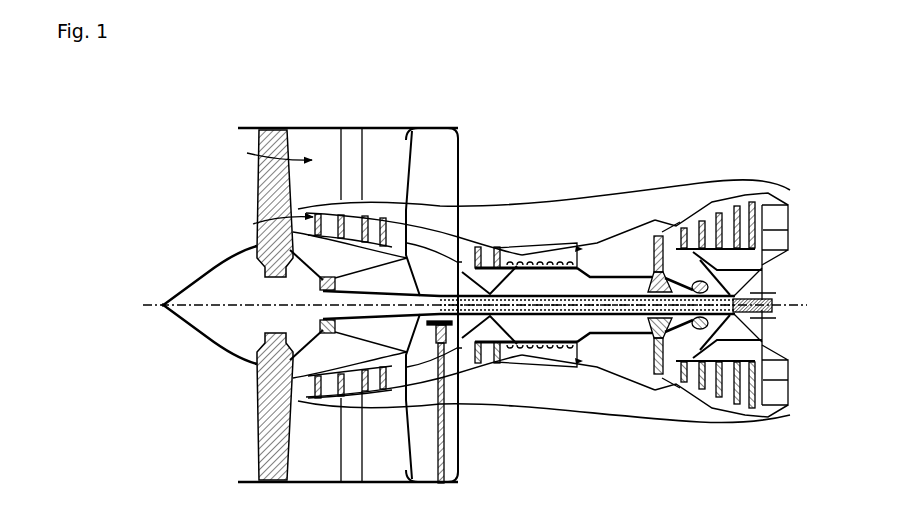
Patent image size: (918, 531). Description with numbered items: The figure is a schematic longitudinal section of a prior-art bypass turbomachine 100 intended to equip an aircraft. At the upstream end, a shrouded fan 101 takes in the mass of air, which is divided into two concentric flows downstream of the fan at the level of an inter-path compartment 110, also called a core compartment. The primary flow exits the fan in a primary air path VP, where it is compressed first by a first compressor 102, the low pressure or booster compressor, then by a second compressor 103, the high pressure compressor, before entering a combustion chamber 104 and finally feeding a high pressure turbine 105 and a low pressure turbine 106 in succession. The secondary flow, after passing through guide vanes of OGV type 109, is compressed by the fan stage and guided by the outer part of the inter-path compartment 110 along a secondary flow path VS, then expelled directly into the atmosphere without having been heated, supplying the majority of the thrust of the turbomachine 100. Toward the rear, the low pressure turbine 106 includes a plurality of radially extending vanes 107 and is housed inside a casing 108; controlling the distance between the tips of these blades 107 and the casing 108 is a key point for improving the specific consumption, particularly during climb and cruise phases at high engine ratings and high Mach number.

The bypass turbomachine 100 is at (132, 212).
The shrouded fan 101 is at (262, 183).
The first compressor 102 is at (262, 394).
The second compressor 103 is at (483, 359).
The combustion chamber 104 is at (614, 357).
The high pressure turbine 105 is at (651, 232).
The low pressure turbine 106 is at (745, 362).
The vanes 107 is at (752, 388).
The casing 108 is at (718, 408).
The guide vanes of OGV type 109 is at (358, 143).
The inter-path compartment 110 is at (553, 196).
The secondary flow path VS is at (266, 147).
The primary air path VP is at (269, 226).